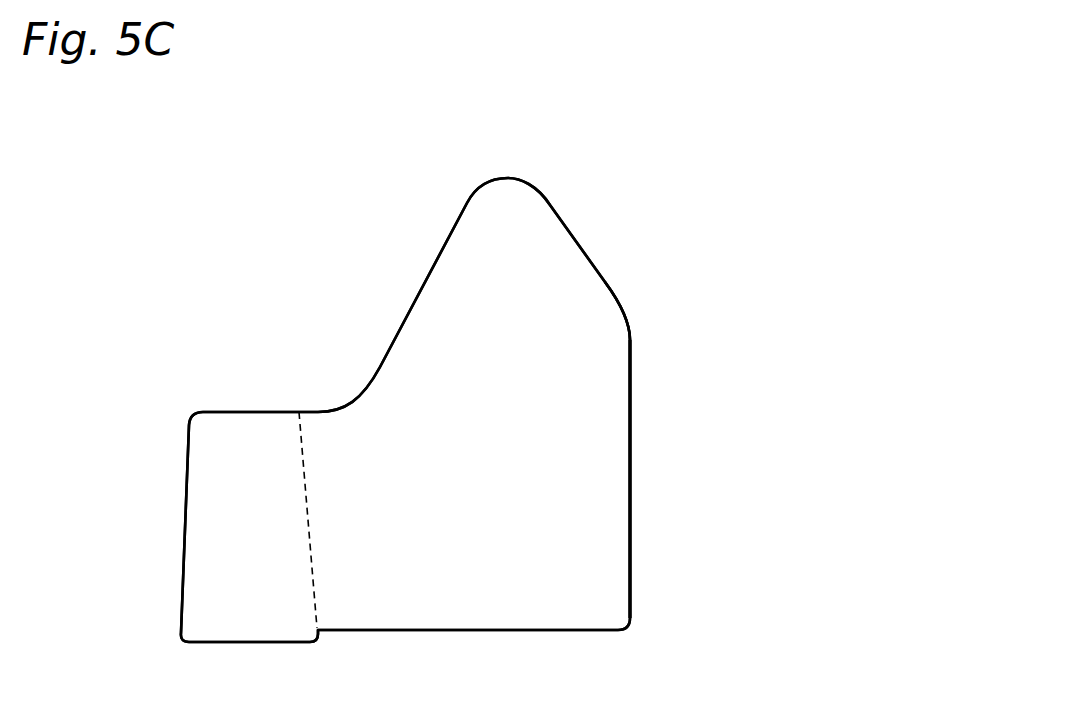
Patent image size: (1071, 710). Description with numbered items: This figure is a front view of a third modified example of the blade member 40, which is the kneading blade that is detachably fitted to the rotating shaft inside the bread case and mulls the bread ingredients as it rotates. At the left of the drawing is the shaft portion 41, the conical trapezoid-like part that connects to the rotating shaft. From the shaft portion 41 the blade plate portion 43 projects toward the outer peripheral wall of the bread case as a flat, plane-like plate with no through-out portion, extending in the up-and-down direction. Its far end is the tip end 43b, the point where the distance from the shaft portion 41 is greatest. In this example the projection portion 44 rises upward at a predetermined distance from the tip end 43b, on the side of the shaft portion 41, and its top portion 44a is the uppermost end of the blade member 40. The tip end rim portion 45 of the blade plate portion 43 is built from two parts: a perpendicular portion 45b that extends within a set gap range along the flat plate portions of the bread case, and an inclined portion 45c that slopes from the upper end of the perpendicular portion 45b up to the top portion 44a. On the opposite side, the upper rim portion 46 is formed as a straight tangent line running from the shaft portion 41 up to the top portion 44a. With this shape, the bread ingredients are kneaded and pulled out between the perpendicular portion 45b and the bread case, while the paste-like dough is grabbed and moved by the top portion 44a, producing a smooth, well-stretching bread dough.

The blade member 40 is at (275, 255).
The shaft portion 41 is at (206, 538).
The blade plate portion 43 is at (578, 513).
The tip end 43b is at (694, 479).
The projection portion 44 is at (530, 226).
The top portion 44a is at (508, 174).
The tip end rim portion 45 is at (752, 288).
The perpendicular portion 45b is at (630, 392).
The inclined portion 45c is at (605, 283).
The upper rim portion 46 is at (415, 302).